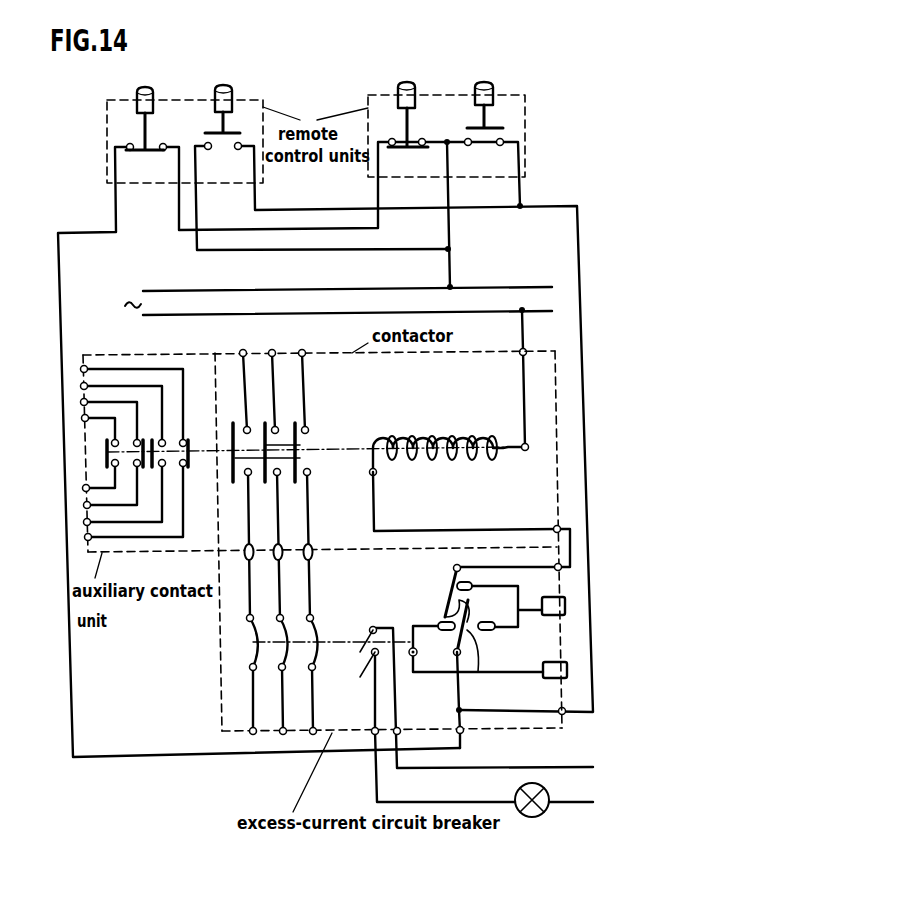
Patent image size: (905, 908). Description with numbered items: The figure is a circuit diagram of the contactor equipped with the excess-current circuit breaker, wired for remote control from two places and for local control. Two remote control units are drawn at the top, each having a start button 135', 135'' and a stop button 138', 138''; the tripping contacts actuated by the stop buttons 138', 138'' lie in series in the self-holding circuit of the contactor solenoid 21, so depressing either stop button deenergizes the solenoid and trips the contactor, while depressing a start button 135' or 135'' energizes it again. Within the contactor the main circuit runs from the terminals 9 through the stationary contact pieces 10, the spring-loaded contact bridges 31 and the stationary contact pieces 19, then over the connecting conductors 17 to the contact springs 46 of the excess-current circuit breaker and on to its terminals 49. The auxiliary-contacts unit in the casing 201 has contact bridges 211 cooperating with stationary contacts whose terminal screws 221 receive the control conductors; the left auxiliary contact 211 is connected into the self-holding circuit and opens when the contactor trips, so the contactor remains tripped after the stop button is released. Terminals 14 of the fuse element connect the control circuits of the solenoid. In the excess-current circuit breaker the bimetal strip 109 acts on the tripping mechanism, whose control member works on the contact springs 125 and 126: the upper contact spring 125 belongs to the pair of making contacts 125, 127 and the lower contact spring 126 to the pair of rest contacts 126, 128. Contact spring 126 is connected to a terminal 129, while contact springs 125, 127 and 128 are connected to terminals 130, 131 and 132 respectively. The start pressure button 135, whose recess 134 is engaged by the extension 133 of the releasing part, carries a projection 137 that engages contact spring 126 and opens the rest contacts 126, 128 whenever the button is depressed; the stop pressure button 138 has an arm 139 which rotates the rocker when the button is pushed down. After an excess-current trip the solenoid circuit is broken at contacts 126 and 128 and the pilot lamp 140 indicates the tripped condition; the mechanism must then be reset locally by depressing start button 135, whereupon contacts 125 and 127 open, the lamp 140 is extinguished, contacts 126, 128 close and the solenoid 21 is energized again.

The stop button 138' is at (128, 107).
The start button 135' is at (239, 98).
The stop button 138'' is at (395, 103).
The start button 135'' is at (503, 91).
The casing 201 is at (130, 356).
The screws 221 is at (82, 418).
The contact bridges 211 is at (105, 451).
The terminals 9 is at (299, 352).
The stationary contact pieces 10 is at (303, 427).
The contact bridges 31 is at (300, 445).
The stationary contact pieces 19 is at (305, 475).
The connecting conductors 17 is at (286, 546).
The spring contact plugs 46 is at (308, 558).
The contactor solenoid 21 is at (423, 437).
The terminals 14 is at (560, 529).
The terminal 129 is at (561, 567).
The projection 137 is at (453, 568).
The contact spring 126 is at (455, 586).
The start pressure button 135 is at (586, 612).
The extension 133 is at (515, 638).
The recess 134 is at (484, 631).
The rest contact 128 is at (472, 642).
The arm 139 is at (447, 631).
The stop pressure button 138 is at (589, 673).
The terminal 132 is at (462, 733).
The terminals 49 is at (311, 734).
The bimetal strip 109 is at (318, 633).
The contact spring 125 is at (351, 648).
The making contact 127 is at (357, 675).
The terminal 130 is at (373, 734).
The terminal 131 is at (398, 734).
The pilot lamp 140 is at (543, 804).